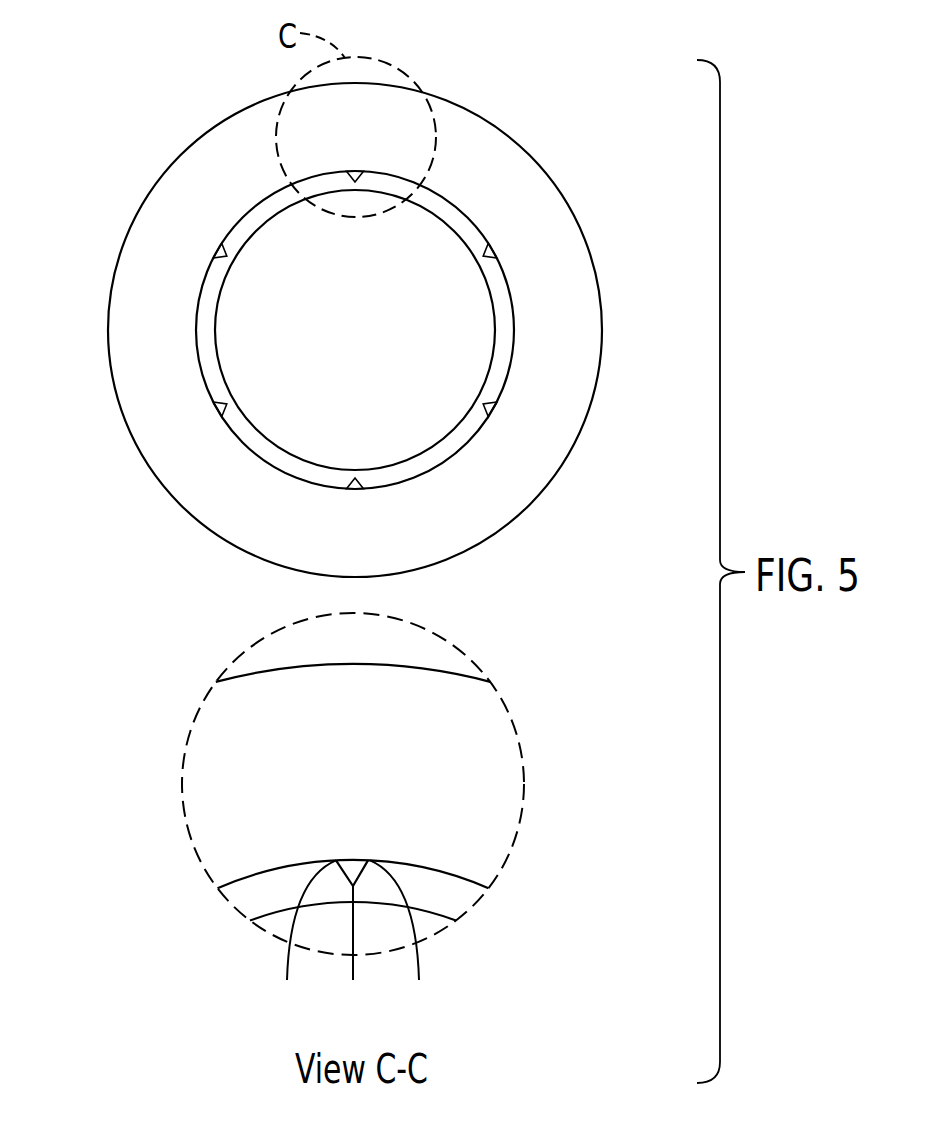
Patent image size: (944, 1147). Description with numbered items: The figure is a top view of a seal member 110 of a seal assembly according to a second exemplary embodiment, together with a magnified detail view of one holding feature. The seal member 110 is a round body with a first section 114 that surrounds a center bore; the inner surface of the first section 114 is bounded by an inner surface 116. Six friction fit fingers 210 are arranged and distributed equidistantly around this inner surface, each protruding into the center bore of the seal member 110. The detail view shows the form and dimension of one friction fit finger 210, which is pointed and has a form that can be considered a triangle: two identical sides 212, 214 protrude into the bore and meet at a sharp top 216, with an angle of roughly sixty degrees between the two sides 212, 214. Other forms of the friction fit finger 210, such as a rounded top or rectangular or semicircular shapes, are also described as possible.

The seal member 110 is at (533, 106).
The first section 114 is at (197, 340).
The inner surface of inner ring 116 is at (497, 327).
The friction fit finger 210 is at (492, 251).
The side of friction fit finger 212 is at (403, 937).
The side of friction fit finger 214 is at (301, 937).
The sharp top of friction fit finger 216 is at (353, 950).